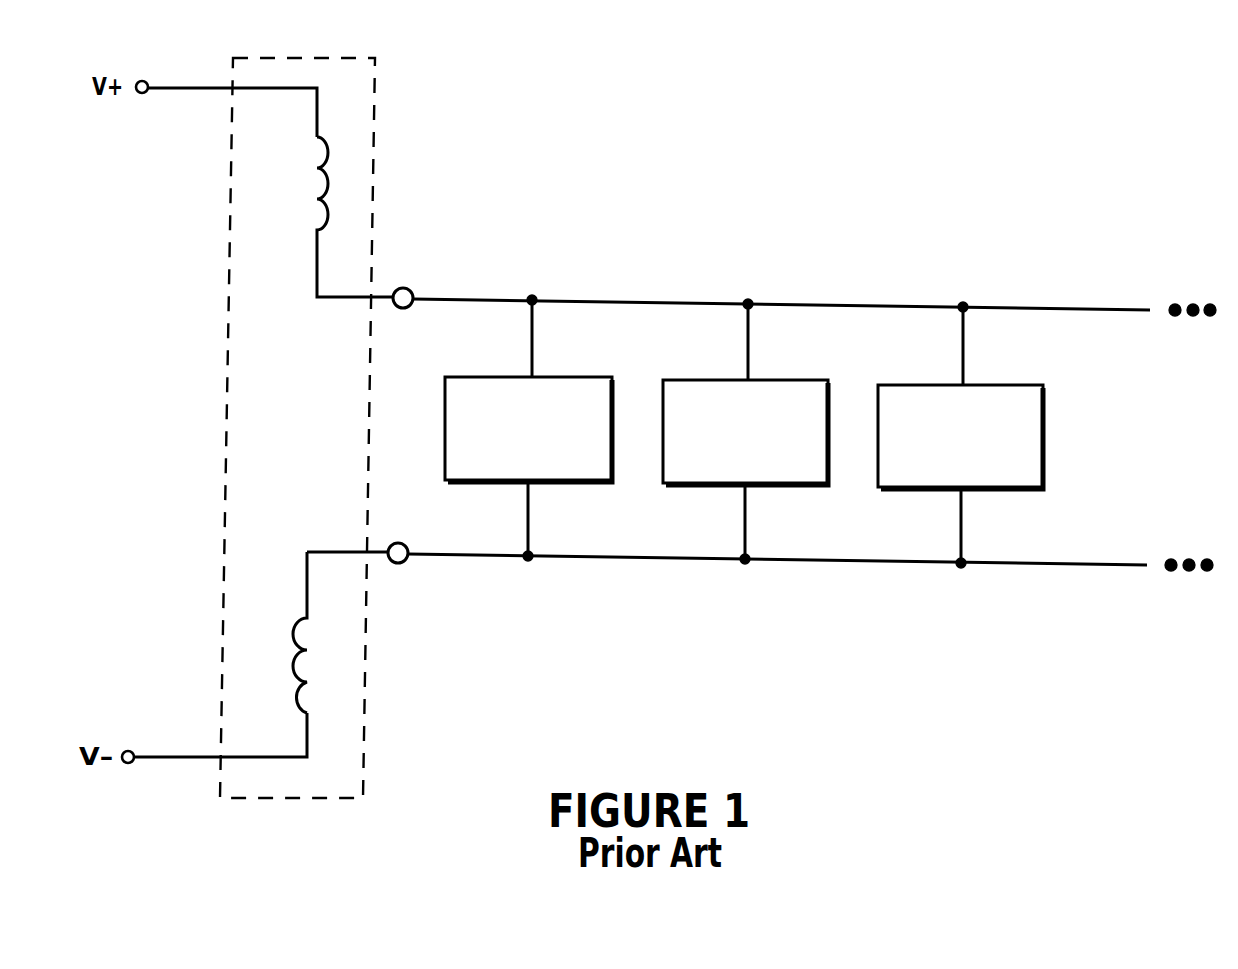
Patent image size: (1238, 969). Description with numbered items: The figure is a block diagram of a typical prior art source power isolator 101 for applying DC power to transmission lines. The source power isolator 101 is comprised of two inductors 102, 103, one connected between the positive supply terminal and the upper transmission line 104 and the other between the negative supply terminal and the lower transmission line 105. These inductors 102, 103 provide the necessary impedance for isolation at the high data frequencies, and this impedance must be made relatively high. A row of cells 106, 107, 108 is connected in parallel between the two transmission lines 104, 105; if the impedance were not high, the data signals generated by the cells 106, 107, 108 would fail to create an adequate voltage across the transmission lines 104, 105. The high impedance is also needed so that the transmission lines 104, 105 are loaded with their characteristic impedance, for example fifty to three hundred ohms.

The source power isolator 101 is at (363, 58).
The inductor 102 is at (313, 182).
The inductor 103 is at (293, 672).
The transmission line 104 is at (435, 300).
The transmission line 105 is at (430, 555).
The cell 106 is at (552, 377).
The cell 107 is at (768, 380).
The cell 108 is at (983, 385).